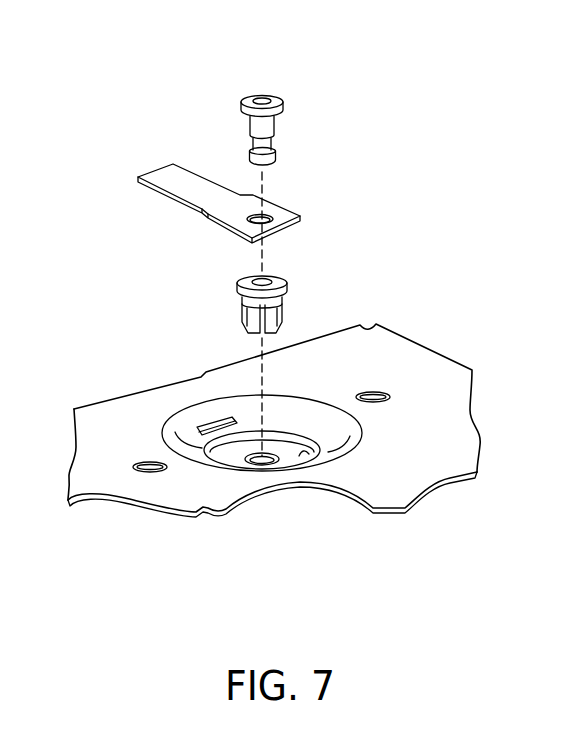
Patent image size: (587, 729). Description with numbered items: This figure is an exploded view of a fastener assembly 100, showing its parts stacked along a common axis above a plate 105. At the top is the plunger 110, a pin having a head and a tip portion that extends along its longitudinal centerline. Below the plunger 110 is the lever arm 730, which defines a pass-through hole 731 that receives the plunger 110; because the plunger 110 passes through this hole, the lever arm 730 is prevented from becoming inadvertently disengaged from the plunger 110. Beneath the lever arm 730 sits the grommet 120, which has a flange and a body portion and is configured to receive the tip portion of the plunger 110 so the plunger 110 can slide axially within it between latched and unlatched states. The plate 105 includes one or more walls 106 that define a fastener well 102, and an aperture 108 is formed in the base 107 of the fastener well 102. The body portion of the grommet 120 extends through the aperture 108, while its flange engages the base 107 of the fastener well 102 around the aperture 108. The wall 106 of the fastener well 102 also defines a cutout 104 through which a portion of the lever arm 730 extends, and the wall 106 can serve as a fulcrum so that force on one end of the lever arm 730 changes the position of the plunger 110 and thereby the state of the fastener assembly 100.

The fastener assembly 100 is at (107, 72).
The plunger 110 is at (223, 115).
The lever arm 730 is at (125, 213).
The pass-through hole 731 is at (263, 219).
The grommet 120 is at (215, 307).
The fastener well 102 is at (303, 400).
The cutout 104 is at (207, 425).
The plate 105 is at (441, 449).
The wall 106 is at (340, 412).
The base 107 is at (306, 458).
The aperture 108 is at (298, 456).